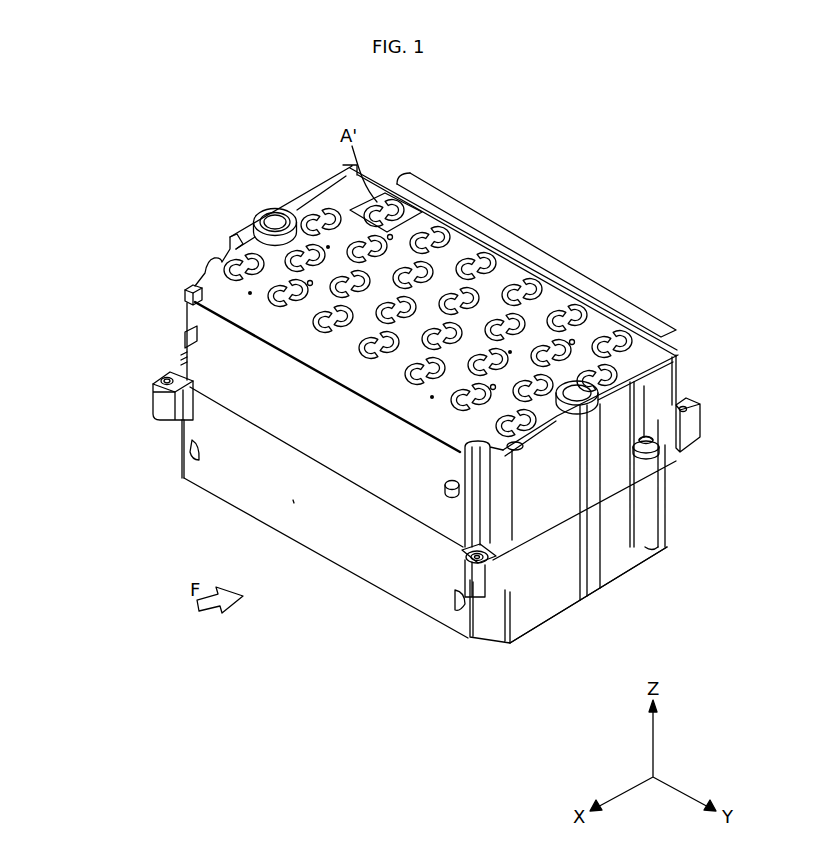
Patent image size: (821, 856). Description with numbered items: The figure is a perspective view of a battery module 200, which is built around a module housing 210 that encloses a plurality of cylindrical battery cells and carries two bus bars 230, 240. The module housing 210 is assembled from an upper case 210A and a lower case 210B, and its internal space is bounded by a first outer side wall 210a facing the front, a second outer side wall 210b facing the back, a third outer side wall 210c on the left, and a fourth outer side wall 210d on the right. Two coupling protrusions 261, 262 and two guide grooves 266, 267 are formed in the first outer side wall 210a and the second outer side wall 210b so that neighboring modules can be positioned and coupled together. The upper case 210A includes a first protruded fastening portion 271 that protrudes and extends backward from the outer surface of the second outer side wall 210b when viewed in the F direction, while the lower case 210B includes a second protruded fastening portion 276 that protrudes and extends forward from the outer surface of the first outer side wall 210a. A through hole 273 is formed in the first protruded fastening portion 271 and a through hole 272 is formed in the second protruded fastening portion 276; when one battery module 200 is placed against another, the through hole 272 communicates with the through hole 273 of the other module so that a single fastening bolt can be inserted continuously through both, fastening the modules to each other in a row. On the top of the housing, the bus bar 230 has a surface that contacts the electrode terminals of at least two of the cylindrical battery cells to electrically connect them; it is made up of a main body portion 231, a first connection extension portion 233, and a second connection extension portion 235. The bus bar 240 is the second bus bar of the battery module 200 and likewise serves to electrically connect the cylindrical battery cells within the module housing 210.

The battery module 200 is at (297, 104).
The module housing 210 is at (82, 383).
The upper case 210A is at (158, 391).
The lower case 210B is at (220, 473).
The first outer side wall 210a is at (318, 435).
The second outer side wall 210b is at (662, 338).
The third outer side wall 210c is at (238, 238).
The fourth outer side wall 210d is at (622, 470).
The bus bar 230 is at (188, 300).
The main body portion 231 is at (273, 268).
The first connection extension portion 233 is at (385, 202).
The second connection extension portion 235 is at (413, 190).
The bus bar 240 is at (657, 298).
The coupling protrusion 261 is at (185, 338).
The coupling protrusion 262 is at (445, 489).
The guide groove 266 is at (190, 448).
The guide groove 267 is at (456, 603).
The first protruded fastening portion 271 is at (697, 428).
The through hole 272 is at (486, 551).
The through hole 273 is at (687, 406).
The second protruded fastening portion 276 is at (490, 585).